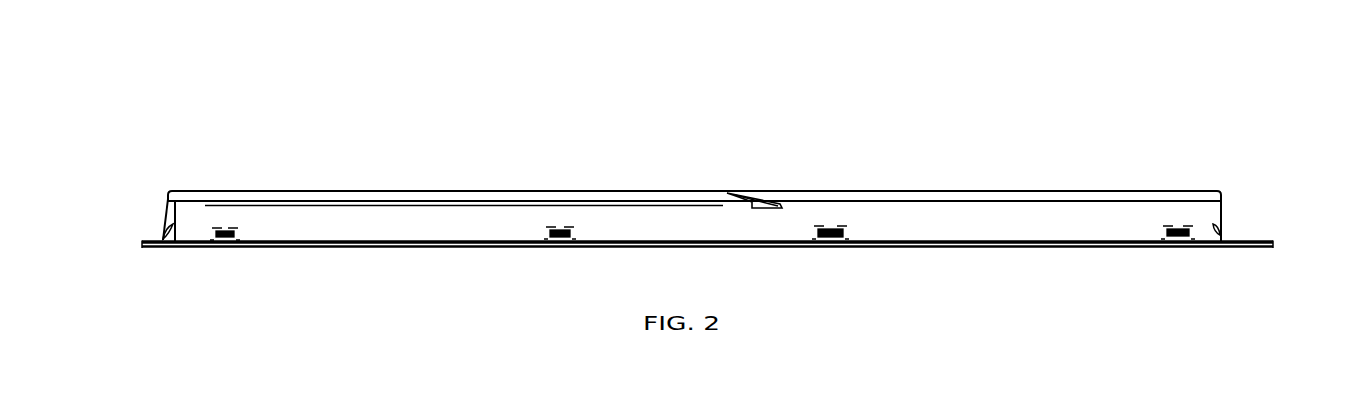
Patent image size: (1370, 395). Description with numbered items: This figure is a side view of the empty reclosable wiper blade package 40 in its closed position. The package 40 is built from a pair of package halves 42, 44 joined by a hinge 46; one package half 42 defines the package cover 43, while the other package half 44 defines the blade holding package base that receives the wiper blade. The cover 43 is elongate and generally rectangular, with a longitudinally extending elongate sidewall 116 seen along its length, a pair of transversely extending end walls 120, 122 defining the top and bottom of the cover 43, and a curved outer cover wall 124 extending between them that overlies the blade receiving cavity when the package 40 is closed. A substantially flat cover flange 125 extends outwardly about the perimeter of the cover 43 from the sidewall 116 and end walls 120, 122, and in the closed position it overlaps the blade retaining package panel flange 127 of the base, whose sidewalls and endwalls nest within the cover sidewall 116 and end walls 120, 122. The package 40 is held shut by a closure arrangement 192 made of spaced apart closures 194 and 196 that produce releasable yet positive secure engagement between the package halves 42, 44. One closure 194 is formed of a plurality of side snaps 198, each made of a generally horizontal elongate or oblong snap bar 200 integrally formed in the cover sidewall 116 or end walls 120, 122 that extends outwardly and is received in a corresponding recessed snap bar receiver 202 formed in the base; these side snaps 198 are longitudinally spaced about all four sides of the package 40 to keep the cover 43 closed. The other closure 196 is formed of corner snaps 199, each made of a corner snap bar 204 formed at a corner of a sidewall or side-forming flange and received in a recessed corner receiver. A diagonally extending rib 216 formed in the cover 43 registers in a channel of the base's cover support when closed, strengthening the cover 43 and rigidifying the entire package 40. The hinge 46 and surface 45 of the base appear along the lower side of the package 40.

The reclosable wiper blade package 40 is at (1210, 88).
The package half 42 is at (1015, 178).
The package cover 43 is at (342, 190).
The package half 44 is at (1030, 248).
The bottom surface of sheet 45 is at (433, 247).
The hinge 46 is at (377, 242).
The cover sidewall 116 is at (937, 215).
The cover end wall 120 is at (1240, 203).
The cover end wall 122 is at (168, 197).
The outer cover wall 124 is at (442, 192).
The cover flange 125 is at (150, 240).
The blade retaining package panel flange 127 is at (147, 252).
The closure arrangement 192 is at (582, 222).
The package closure 194 is at (240, 253).
The package closure 196 is at (180, 247).
The side snap 198 is at (225, 257).
The corner snap 199 is at (185, 207).
The snap bar 200 is at (227, 232).
The recessed snap bar receiver 202 is at (236, 231).
The corner snap bar 204 is at (162, 237).
The diagonally extending rib 216 is at (750, 195).